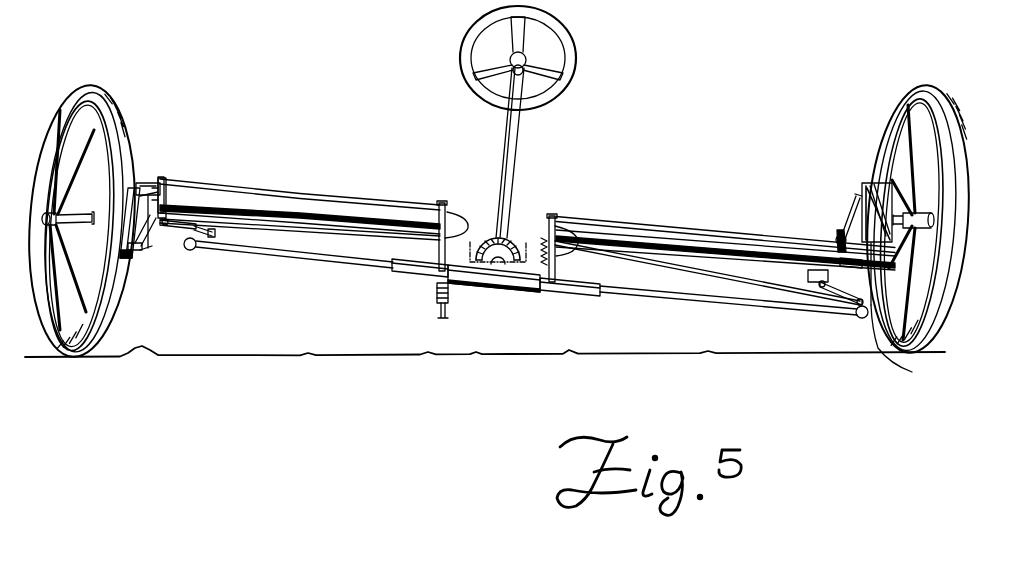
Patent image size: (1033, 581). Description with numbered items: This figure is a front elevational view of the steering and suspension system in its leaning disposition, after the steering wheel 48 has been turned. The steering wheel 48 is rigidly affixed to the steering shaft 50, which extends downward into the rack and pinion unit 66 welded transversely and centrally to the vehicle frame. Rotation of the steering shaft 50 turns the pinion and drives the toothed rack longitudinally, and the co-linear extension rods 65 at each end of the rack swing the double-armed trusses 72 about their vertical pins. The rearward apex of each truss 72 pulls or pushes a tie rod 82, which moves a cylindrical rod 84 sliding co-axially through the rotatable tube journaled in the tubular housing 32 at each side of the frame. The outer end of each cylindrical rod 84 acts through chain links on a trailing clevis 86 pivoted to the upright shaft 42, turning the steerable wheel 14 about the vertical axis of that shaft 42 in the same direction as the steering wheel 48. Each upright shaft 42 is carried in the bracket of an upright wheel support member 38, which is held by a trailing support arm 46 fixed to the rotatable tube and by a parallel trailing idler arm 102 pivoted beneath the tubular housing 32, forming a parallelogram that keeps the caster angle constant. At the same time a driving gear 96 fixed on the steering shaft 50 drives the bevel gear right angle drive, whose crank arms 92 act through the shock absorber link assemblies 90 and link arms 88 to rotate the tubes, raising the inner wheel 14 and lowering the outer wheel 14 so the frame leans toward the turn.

The steerable wheel 14 is at (118, 123).
The cylindrical tubular housing 32 is at (243, 188).
The upright wheel support member 38 is at (142, 266).
The upright tubular shaft 42 is at (122, 268).
The trailing support arm 46 is at (850, 208).
The steering wheel 48 is at (576, 45).
The steering shaft 50 is at (508, 130).
The extension rod 65 is at (284, 256).
The rack and pinion unit 66 is at (502, 288).
The double-armed truss 72 is at (176, 240).
The tie rod 82 is at (330, 226).
The cylindrical rod 84 is at (458, 206).
The trailing clevis 86 is at (145, 183).
The link arm 88 is at (438, 236).
The shock absorber link assembly 90 is at (432, 288).
The crank arm 92 is at (522, 240).
The driving gear 96 is at (518, 240).
The trailing idler arm 102 is at (160, 244).